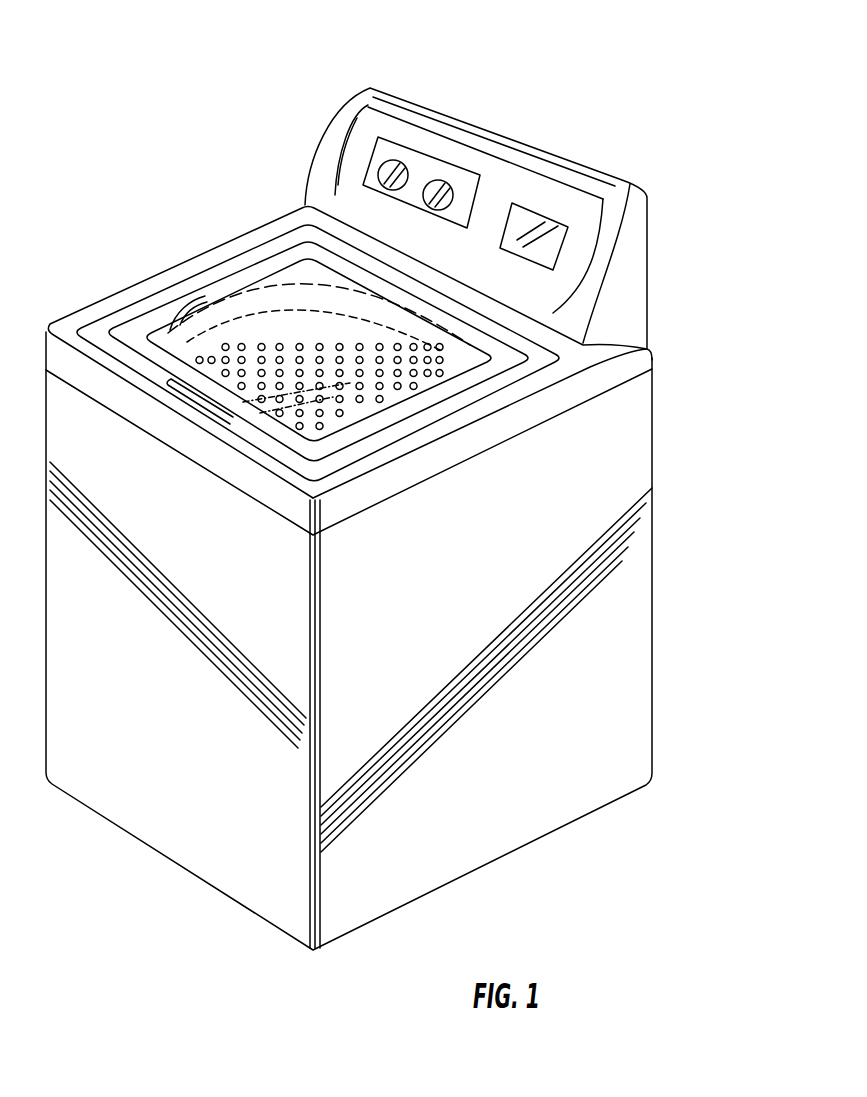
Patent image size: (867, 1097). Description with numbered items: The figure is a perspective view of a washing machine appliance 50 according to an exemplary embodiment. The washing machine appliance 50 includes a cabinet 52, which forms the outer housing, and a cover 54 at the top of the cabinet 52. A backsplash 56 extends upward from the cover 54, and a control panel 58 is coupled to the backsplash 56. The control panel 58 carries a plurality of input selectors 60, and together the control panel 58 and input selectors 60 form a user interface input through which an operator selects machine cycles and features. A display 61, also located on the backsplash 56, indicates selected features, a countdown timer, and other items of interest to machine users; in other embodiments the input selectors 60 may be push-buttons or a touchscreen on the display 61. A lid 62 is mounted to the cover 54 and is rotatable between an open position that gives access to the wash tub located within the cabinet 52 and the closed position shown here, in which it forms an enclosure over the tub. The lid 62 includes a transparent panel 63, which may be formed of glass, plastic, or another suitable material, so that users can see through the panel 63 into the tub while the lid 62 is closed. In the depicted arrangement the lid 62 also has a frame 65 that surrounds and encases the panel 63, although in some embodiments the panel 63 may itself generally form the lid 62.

The washing machine appliance 50 is at (148, 97).
The cabinet 52 is at (689, 543).
The cover 54 is at (131, 307).
The backsplash 56 is at (500, 193).
The control panel 58 is at (432, 160).
The input selectors 60 is at (435, 177).
The display 61 is at (553, 230).
The lid 62 is at (307, 280).
The transparent panel 63 is at (289, 278).
The frame 65 is at (200, 293).